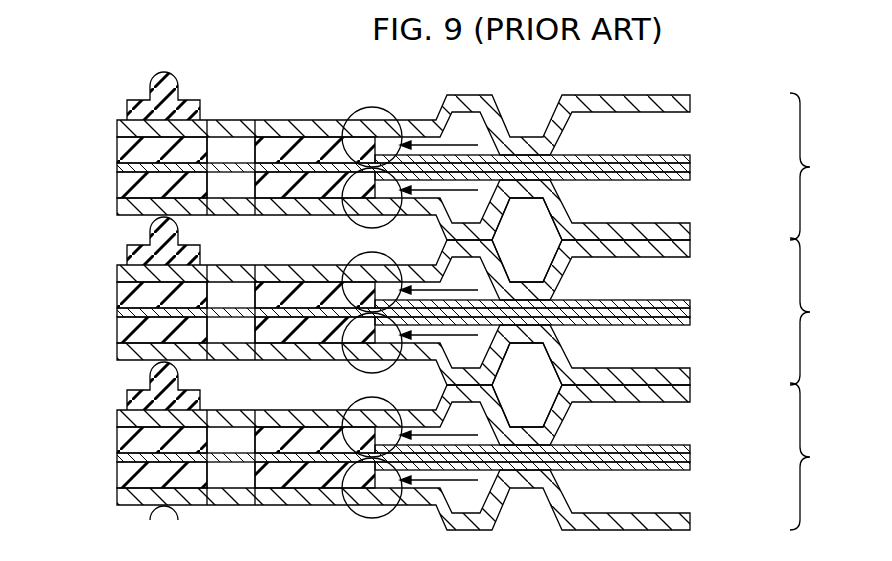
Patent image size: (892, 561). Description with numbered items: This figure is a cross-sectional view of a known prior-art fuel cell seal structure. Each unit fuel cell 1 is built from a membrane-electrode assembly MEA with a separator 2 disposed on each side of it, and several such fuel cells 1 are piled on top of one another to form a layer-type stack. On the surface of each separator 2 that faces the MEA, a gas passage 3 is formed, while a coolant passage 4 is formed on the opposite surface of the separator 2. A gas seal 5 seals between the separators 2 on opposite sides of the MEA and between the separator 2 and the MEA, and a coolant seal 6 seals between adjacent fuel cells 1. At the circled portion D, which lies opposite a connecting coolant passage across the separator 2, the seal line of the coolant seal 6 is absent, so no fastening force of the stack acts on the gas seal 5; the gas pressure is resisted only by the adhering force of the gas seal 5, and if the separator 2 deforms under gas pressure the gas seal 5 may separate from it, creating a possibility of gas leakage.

The fuel cell 1 is at (450, 301).
The separator 2 is at (680, 522).
The gas passage 3 is at (646, 493).
The coolant passage 4 is at (522, 400).
The gas seal 5 is at (140, 475).
The coolant seal 6 is at (138, 397).
The membrane-electrode assembly MEA is at (682, 458).
The portion D is at (345, 480).